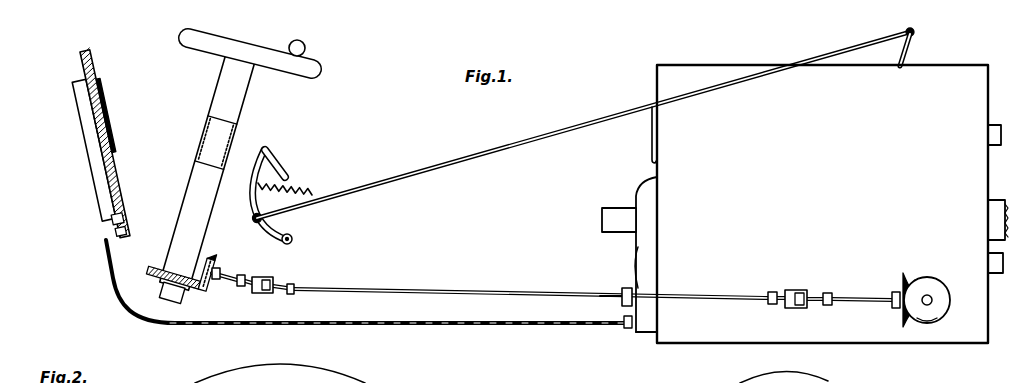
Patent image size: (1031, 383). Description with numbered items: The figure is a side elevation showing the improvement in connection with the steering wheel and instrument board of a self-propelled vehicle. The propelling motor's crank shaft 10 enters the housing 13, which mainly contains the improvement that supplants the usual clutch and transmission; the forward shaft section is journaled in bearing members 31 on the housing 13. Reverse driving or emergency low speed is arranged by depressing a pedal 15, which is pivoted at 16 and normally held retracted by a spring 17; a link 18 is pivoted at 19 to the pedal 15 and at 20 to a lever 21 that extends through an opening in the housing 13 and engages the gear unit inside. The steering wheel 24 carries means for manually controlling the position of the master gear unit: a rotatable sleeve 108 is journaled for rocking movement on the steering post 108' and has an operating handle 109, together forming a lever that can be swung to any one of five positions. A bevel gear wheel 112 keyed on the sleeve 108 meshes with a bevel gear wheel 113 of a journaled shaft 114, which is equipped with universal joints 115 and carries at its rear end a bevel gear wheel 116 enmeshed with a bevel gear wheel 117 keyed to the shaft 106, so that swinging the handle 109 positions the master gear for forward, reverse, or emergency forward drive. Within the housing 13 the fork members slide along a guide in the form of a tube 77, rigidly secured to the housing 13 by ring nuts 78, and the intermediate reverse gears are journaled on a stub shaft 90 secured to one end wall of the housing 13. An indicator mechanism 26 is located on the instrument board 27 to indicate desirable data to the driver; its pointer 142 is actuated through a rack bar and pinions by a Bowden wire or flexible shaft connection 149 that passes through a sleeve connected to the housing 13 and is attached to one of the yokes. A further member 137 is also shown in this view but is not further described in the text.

In FIG. 1, the crank shaft 10 is at (614, 214).
In FIG. 1, the housing 13 is at (820, 204).
In FIG. 1, the pedal 15 is at (279, 165).
In FIG. 1, the pedal pivot 16 is at (297, 234).
In FIG. 1, the spring 17 is at (306, 190).
In FIG. 1, the link 18 is at (440, 164).
In FIG. 1, the link pivot 19 is at (254, 222).
In FIG. 1, the lever pivot 20 is at (907, 31).
In FIG. 1, the lever 21 is at (913, 58).
In FIG. 1, the steering wheel 24 is at (226, 49).
In FIG. 1, the indicator mechanism 26 is at (86, 208).
In FIG. 1, the instrument board 27 is at (88, 62).
In FIG. 1, the bearing members 31 is at (634, 195).
In FIG. 1, the guide tube 77 is at (618, 294).
In FIG. 1, the ring nuts 78 is at (625, 287).
In FIG. 1, the stub shaft 90 is at (1000, 134).
In FIG. 1, the shaft 106 is at (931, 297).
In FIG. 1, the rotatable sleeve 108 is at (221, 187).
In FIG. 1, the steering post 108' is at (199, 143).
In FIG. 1, the operating handle 109 is at (308, 56).
In FIG. 1, the bevel gear wheel 112 is at (170, 268).
In FIG. 1, the bevel gear wheel 113 is at (214, 267).
In FIG. 1, the shaft 114 is at (529, 293).
In FIG. 1, the universal joints 115 is at (266, 282).
In FIG. 1, the bevel gear wheel 116 is at (902, 276).
In FIG. 1, the bevel gear wheel 117 is at (921, 325).
In FIG. 2, the arc member 137 is at (834, 382).
In FIG. 1, the pointer 142 is at (104, 130).
In FIG. 1, the flexible shaft connection 149 is at (498, 328).